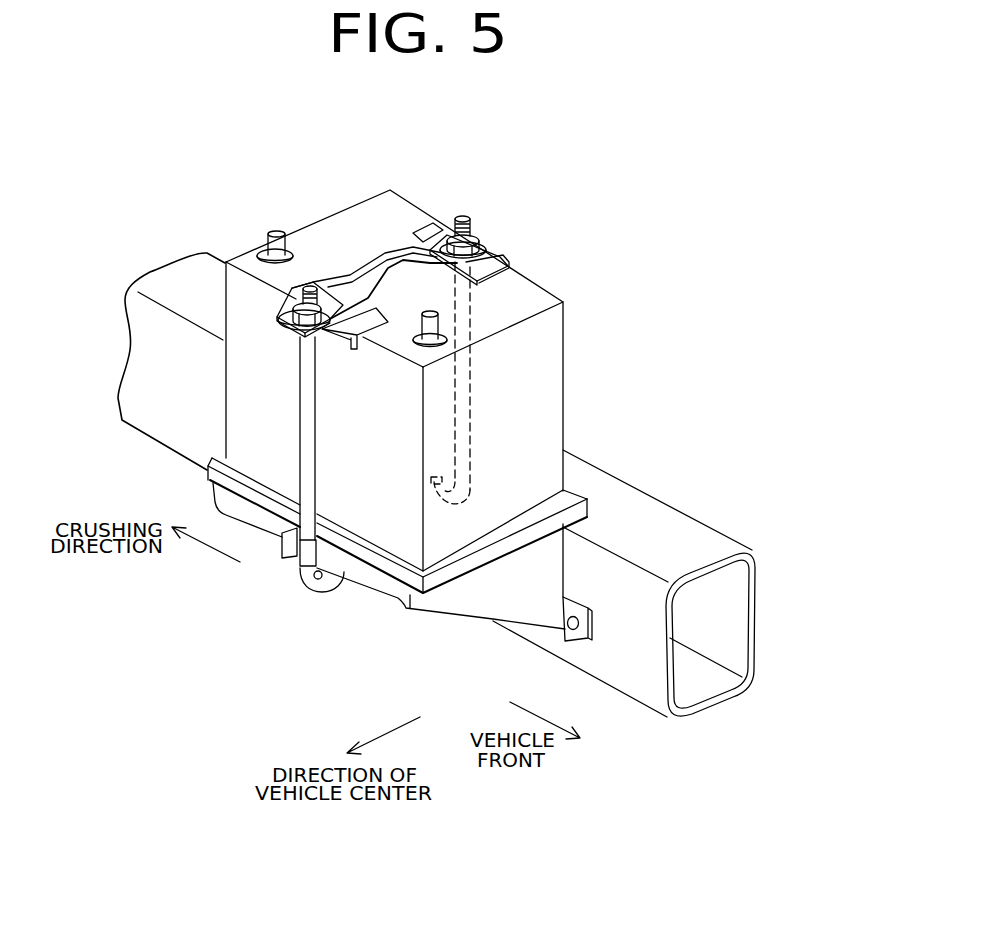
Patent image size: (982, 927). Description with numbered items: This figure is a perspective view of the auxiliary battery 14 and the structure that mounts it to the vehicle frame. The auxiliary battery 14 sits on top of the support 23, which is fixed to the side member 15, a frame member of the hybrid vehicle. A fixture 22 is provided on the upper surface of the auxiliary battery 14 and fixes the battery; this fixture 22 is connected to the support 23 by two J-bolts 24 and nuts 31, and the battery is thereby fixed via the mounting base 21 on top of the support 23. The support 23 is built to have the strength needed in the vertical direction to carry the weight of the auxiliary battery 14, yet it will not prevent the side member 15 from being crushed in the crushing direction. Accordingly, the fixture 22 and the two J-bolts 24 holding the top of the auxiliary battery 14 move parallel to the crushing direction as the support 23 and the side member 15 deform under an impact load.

The auxiliary battery 14 is at (541, 288).
The side member 15 is at (677, 511).
The mounting base 21 is at (477, 565).
The fixture 22 is at (285, 326).
The support 23 is at (438, 613).
The J-bolt 24 is at (470, 297).
The nut 31 is at (328, 283).